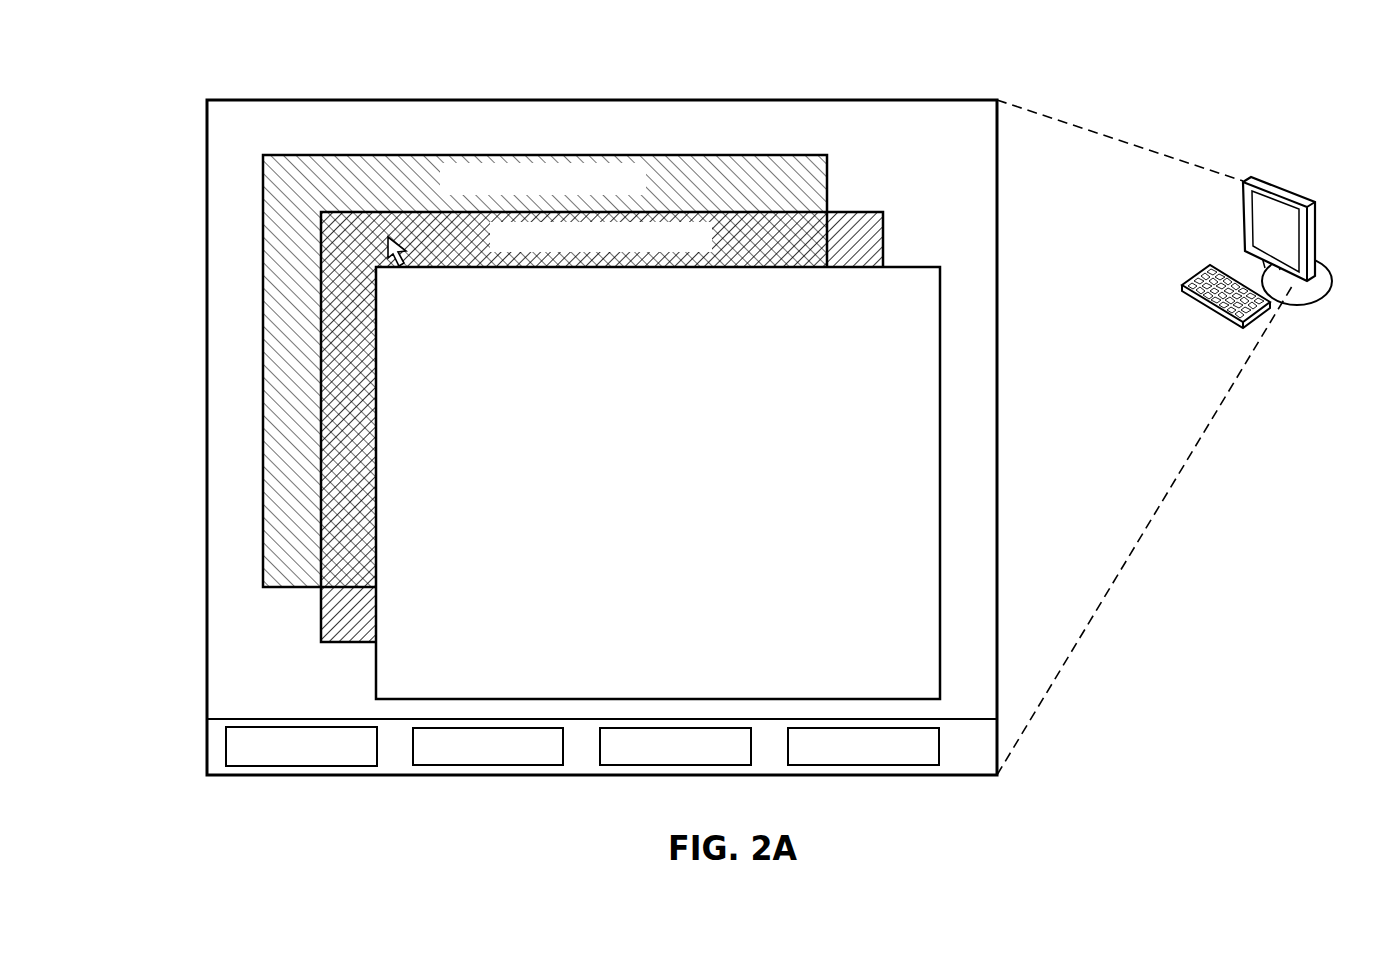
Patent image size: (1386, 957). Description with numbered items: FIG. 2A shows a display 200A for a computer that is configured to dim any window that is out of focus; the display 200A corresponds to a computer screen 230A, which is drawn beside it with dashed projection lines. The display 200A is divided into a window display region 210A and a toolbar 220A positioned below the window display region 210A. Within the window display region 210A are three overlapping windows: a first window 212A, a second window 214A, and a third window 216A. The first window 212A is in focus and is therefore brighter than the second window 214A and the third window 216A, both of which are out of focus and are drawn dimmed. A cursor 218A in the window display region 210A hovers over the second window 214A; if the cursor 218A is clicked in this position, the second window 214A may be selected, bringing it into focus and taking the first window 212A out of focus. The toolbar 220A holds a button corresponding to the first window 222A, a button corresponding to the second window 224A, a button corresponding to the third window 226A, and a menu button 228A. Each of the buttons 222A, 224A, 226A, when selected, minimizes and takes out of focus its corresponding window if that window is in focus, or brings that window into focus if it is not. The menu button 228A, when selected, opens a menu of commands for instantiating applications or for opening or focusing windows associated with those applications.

The display 200A is at (206, 93).
The window display region 210A is at (204, 101).
The first window 212A is at (742, 301).
The second window 214A is at (702, 246).
The third window 216A is at (633, 189).
The cursor 218A is at (401, 266).
The toolbar 220A is at (204, 721).
The button corresponding to the first window 222A is at (533, 758).
The button corresponding to the second window 224A is at (737, 758).
The button corresponding to the third window 226A is at (913, 758).
The menu button 228A is at (353, 759).
The computer screen 230A is at (1360, 176).